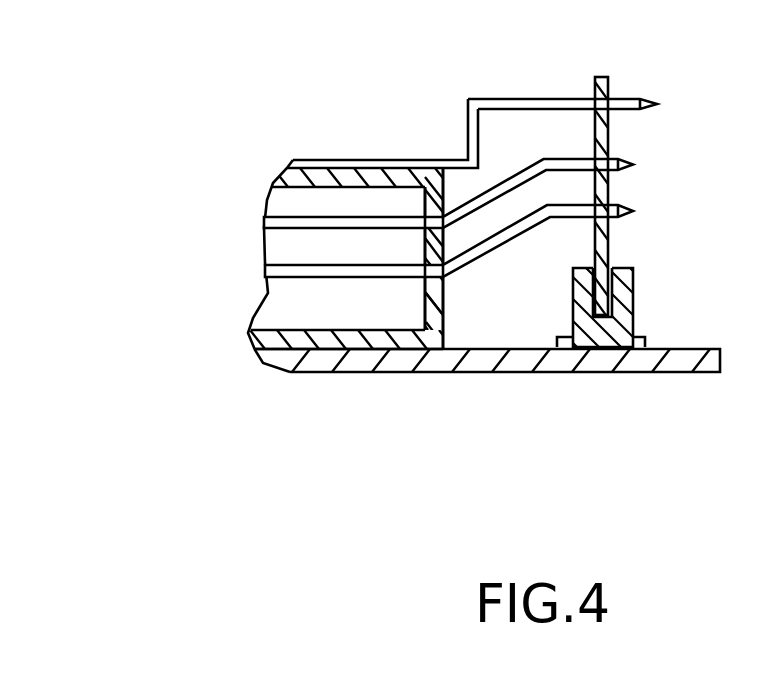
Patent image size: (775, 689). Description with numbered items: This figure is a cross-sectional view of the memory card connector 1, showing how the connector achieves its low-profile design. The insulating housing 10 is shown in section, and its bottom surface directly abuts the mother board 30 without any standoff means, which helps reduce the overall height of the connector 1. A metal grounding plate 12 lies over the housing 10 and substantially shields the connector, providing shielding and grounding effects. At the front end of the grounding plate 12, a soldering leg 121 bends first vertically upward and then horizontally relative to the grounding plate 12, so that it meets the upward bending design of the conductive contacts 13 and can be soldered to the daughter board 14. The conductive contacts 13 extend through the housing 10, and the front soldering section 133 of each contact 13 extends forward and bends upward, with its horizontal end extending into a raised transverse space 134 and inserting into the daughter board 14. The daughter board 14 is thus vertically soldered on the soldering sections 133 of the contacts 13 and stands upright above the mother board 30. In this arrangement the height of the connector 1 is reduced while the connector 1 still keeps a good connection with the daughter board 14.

The memory card connector 1 is at (446, 258).
The insulating housing 10 is at (287, 168).
The metal grounding plate 12 is at (452, 148).
The soldering legs 121 is at (512, 100).
The conductive contacts 13 is at (467, 303).
The soldering section 133 is at (503, 193).
The raised transverse space 134 is at (558, 235).
The daughter board 14 is at (602, 132).
The mother board 30 is at (637, 362).